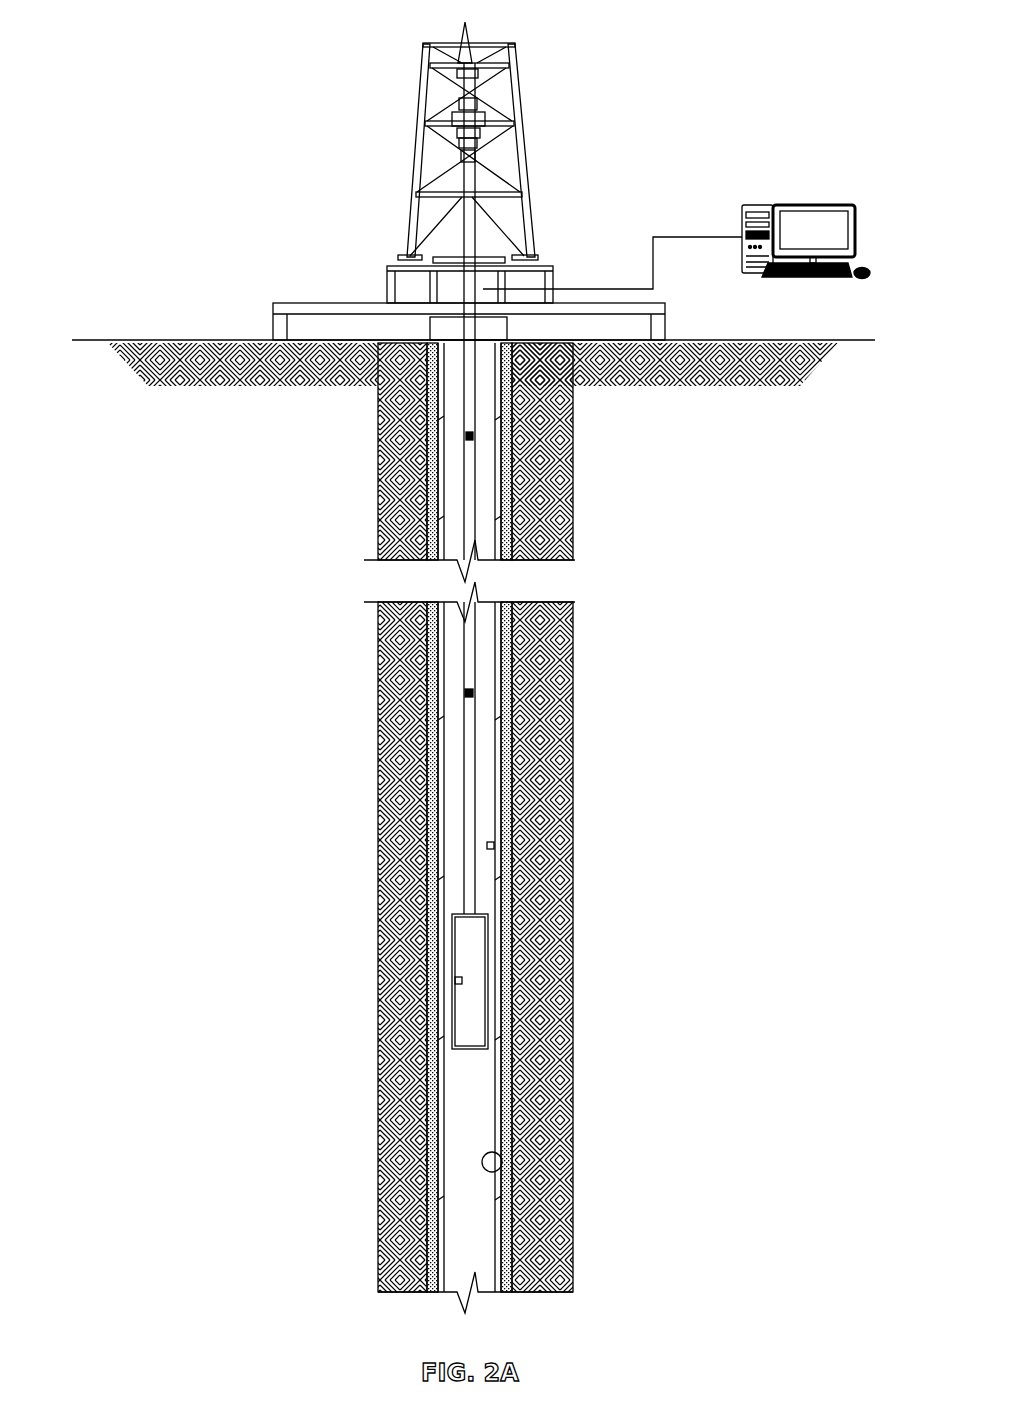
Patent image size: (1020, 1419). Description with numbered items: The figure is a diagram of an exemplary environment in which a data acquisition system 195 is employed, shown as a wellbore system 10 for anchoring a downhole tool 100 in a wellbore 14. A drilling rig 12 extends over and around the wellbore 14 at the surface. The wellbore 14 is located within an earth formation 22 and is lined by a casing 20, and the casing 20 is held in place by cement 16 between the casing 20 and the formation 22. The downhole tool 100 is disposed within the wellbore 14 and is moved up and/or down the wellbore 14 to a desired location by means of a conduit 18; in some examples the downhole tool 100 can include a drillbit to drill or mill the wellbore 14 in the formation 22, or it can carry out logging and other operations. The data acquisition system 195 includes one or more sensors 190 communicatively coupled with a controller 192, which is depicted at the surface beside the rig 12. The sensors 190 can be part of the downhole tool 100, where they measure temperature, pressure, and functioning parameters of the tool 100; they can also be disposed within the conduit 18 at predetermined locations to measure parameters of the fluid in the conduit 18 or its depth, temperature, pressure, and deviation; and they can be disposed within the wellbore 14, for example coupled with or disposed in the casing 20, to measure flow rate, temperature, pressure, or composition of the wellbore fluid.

The wellbore system 10 is at (693, 42).
The drilling rig 12 is at (412, 168).
The wellbore 14 is at (498, 697).
The cement 16 is at (507, 745).
The conduit 18 is at (476, 788).
The casing 20 is at (500, 1156).
The earth formation 22 is at (512, 1205).
The downhole tool 100 is at (489, 980).
The sensors 190 is at (472, 437).
The controller 192 is at (813, 205).
The data acquisition system 195 is at (792, 166).